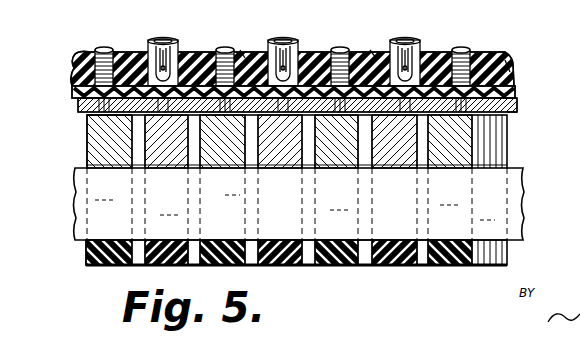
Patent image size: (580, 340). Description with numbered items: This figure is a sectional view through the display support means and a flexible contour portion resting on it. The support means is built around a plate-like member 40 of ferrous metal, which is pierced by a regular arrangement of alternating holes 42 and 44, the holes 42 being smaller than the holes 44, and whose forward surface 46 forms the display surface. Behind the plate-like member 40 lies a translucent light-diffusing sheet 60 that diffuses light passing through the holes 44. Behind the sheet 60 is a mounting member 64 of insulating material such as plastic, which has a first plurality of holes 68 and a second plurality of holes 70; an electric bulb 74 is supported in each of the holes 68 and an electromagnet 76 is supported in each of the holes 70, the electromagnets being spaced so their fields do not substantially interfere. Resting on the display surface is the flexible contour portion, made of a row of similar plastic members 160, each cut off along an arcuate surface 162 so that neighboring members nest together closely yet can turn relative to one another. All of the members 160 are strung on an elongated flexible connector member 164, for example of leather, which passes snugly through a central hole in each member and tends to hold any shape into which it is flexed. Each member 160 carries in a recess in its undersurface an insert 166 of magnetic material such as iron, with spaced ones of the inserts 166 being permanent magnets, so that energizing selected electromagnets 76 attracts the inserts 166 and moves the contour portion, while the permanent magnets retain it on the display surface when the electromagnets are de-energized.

The plate-like member 40 is at (518, 106).
The holes 42 is at (97, 118).
The holes 44 is at (185, 55).
The forward surface 46 is at (508, 136).
The sheet 60 is at (519, 94).
The mounting member 64 is at (83, 56).
The first plurality of holes 68 is at (297, 98).
The second plurality of holes 70 is at (77, 104).
The electric bulb 74 is at (165, 34).
The electromagnet 76 is at (105, 44).
The members 160 is at (223, 246).
The arcuate surface 162 is at (140, 242).
The connector member 164 is at (523, 207).
The insert 166 is at (105, 165).